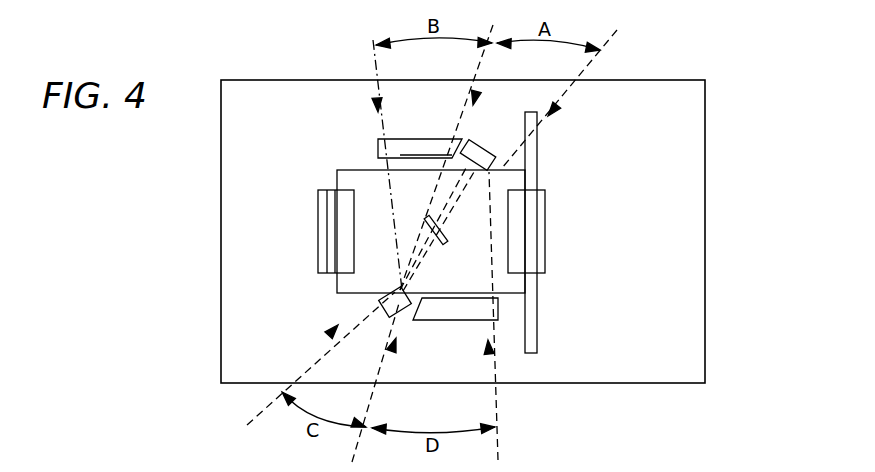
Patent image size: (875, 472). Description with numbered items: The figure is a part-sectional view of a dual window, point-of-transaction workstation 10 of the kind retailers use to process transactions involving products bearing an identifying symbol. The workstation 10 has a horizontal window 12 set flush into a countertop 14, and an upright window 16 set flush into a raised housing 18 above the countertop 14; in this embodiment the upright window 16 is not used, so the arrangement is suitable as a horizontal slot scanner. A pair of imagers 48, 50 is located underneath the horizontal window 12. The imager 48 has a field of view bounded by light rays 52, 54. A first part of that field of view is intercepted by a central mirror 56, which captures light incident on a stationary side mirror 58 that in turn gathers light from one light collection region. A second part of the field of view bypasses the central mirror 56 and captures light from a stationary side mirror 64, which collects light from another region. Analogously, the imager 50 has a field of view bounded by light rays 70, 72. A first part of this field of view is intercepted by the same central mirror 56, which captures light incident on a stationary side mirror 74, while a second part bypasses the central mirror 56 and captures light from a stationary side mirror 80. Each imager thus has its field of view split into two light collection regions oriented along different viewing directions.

The point-of-transaction workstation 10 is at (803, 104).
The horizontal window 12 is at (353, 176).
The countertop 14 is at (268, 328).
The upright window 16 is at (535, 337).
The raised housing 18 is at (692, 170).
The imager 48 is at (392, 310).
The imager 50 is at (480, 146).
The light ray 52 is at (605, 47).
The light ray 54 is at (373, 66).
The central mirror 56 is at (441, 240).
The stationary side mirror 58 is at (317, 222).
The stationary side mirror 64 is at (405, 140).
The light ray 70 is at (262, 413).
The light ray 72 is at (500, 418).
The stationary side mirror 74 is at (545, 258).
The stationary side mirror 80 is at (455, 308).